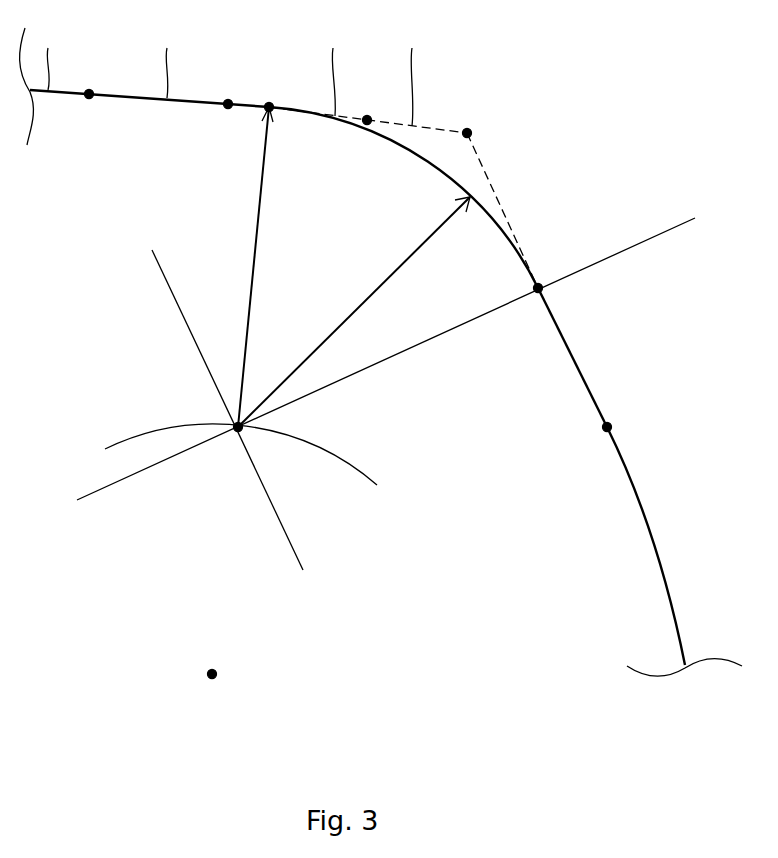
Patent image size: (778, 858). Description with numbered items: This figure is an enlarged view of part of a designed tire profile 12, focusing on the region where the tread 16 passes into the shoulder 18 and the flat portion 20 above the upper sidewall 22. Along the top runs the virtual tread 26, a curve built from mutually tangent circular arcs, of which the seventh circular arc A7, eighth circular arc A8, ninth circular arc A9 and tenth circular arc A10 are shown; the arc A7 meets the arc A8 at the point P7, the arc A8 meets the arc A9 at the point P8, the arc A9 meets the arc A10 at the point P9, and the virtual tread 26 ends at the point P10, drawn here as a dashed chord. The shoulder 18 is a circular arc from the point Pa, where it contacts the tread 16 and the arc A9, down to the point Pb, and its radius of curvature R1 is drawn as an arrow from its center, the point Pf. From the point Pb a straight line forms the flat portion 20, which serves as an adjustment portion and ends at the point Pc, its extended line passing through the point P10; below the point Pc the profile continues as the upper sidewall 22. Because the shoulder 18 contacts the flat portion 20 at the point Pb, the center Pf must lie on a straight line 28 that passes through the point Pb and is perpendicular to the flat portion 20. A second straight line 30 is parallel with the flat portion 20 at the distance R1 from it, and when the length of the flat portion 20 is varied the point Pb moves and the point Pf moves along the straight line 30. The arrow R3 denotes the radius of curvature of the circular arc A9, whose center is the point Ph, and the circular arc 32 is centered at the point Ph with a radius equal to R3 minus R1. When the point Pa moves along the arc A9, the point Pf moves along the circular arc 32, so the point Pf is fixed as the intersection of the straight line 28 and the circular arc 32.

The tire profile 12 is at (538, 143).
The tread 16 is at (135, 106).
The shoulder 18 is at (378, 138).
The flat portion 20 is at (572, 353).
The upper sidewall 22 is at (644, 513).
The virtual tread 26 is at (438, 120).
The straight line 28 is at (445, 335).
The straight line 30 is at (283, 520).
The circular arc 32 is at (315, 445).
The radius of curvature of the shoulder R1 is at (354, 312).
The radius of curvature of the circular arc A9 R3 is at (249, 267).
The seventh circular arc A7 is at (49, 57).
The point P7 is at (89, 92).
The eighth circular arc A8 is at (168, 61).
The point P8 is at (228, 102).
The point Pa is at (269, 105).
The ninth circular arc A9 is at (334, 70).
The point P9 is at (367, 118).
The tenth circular arc A10 is at (414, 75).
The point P10 is at (467, 133).
The point Pb is at (538, 288).
The point Pc is at (607, 427).
The point Pf is at (238, 427).
The point Ph is at (212, 674).